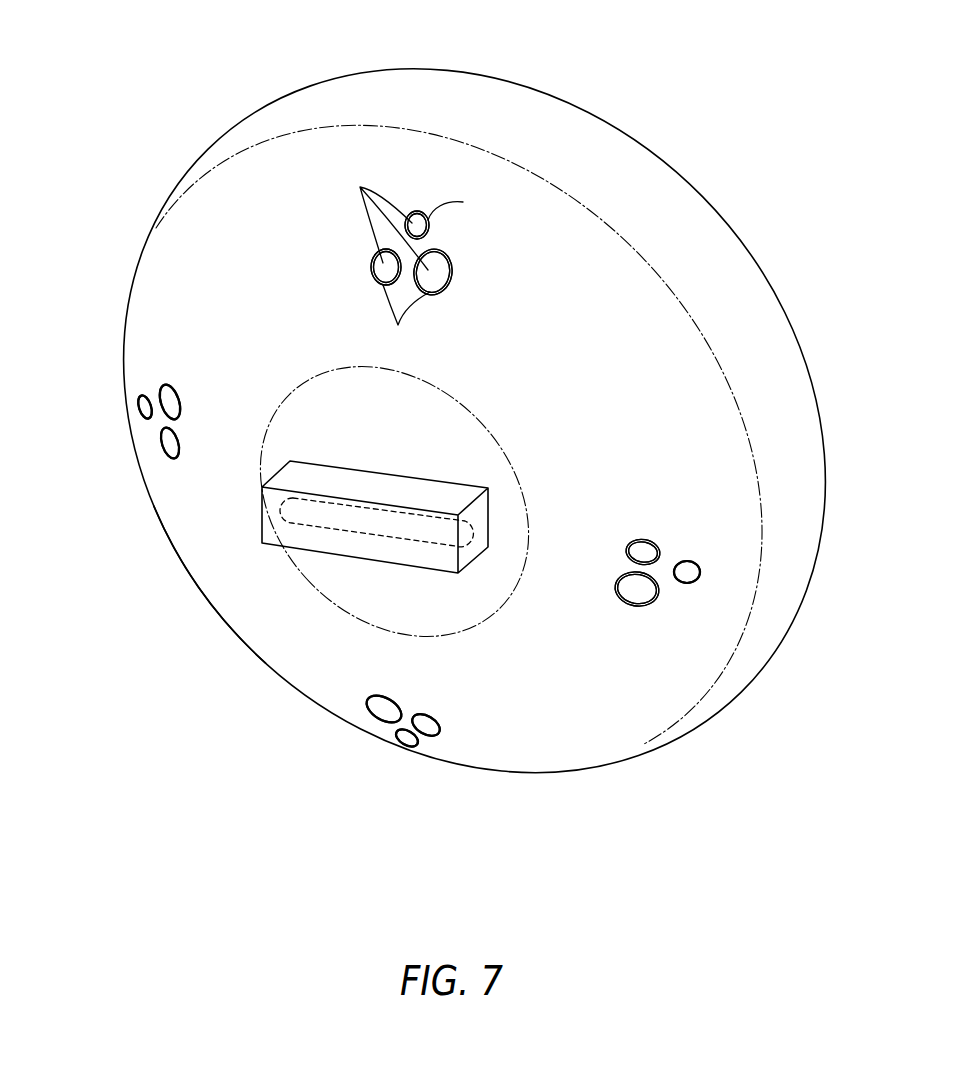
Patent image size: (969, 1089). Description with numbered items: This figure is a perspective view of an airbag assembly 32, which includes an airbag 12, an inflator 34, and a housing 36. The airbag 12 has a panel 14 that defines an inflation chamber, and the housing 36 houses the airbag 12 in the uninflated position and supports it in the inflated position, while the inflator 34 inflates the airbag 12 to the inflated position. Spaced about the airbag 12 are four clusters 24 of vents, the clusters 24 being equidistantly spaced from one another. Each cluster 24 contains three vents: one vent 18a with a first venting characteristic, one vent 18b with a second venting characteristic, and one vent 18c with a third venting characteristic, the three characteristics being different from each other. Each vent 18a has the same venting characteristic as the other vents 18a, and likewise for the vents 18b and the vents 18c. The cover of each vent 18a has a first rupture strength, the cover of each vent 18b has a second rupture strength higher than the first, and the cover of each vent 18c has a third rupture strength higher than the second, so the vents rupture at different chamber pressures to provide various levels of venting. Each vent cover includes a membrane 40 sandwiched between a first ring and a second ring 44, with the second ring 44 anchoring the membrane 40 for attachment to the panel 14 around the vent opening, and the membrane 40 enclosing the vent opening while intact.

The airbag 12 is at (659, 149).
The panel 14 is at (177, 283).
The vent 18a is at (423, 193).
The vent 18b is at (359, 278).
The vent 18c is at (461, 284).
The cluster 24 is at (491, 250).
The airbag assembly 32 is at (190, 604).
The inflator 34 is at (340, 542).
The housing 36 is at (262, 518).
The membrane 40 is at (360, 187).
The second ring 44 is at (435, 273).